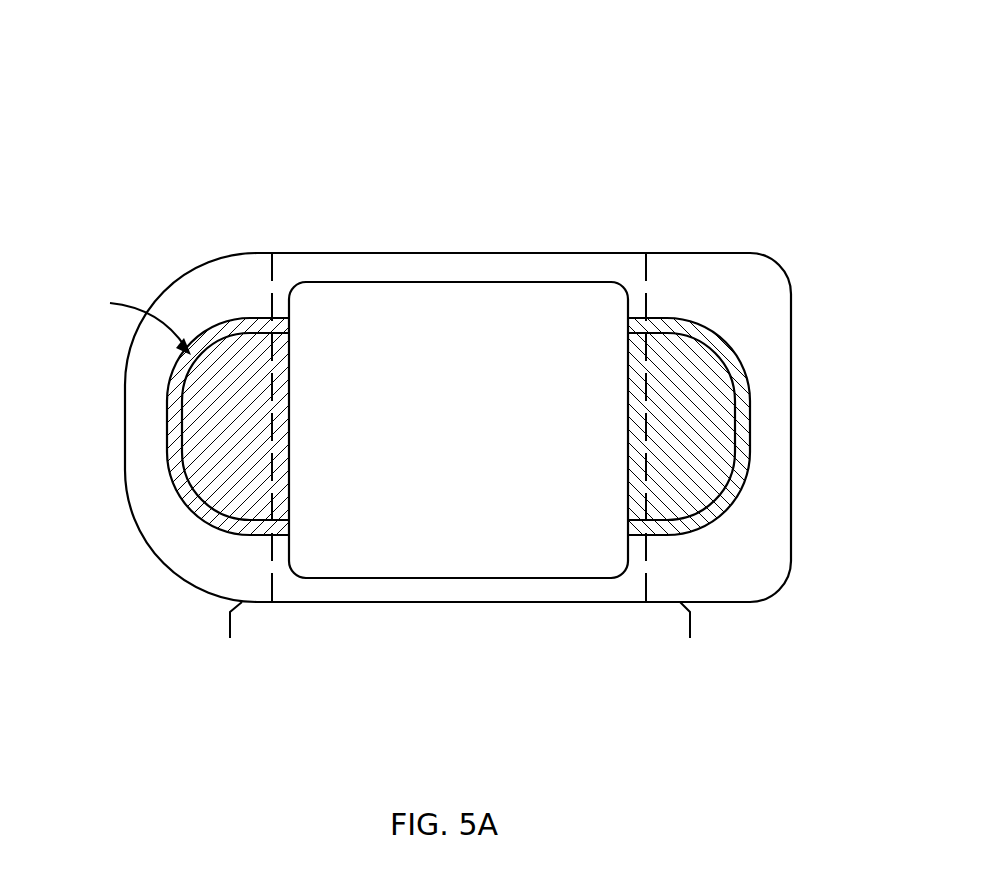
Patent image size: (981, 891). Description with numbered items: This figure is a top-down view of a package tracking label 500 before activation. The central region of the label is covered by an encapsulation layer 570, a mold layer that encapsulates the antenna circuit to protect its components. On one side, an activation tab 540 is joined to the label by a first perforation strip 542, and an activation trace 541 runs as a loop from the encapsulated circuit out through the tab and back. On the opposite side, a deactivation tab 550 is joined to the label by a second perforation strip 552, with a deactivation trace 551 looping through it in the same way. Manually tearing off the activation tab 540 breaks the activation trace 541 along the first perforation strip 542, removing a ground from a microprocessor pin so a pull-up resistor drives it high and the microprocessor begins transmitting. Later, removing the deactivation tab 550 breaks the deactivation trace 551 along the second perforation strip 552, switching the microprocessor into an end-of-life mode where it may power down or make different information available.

The package tracking label 500 is at (584, 92).
The activation tab 540 is at (200, 266).
The activation trace 541 is at (212, 515).
The first perforation strip 542 is at (272, 297).
The deactivation tab 550 is at (715, 252).
The deactivation trace 551 is at (712, 505).
The second perforation strip 552 is at (646, 297).
The encapsulation layer 570 is at (443, 578).